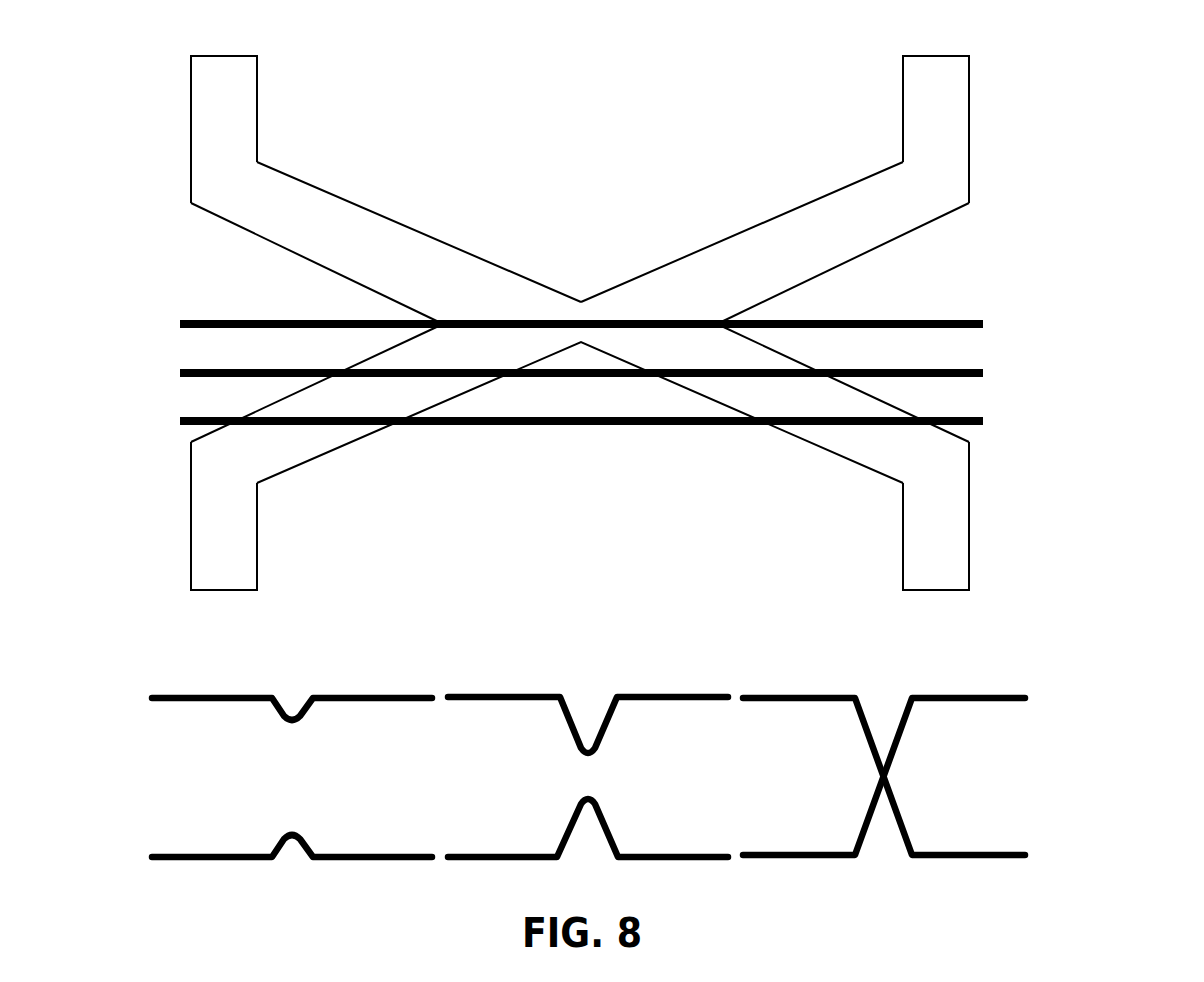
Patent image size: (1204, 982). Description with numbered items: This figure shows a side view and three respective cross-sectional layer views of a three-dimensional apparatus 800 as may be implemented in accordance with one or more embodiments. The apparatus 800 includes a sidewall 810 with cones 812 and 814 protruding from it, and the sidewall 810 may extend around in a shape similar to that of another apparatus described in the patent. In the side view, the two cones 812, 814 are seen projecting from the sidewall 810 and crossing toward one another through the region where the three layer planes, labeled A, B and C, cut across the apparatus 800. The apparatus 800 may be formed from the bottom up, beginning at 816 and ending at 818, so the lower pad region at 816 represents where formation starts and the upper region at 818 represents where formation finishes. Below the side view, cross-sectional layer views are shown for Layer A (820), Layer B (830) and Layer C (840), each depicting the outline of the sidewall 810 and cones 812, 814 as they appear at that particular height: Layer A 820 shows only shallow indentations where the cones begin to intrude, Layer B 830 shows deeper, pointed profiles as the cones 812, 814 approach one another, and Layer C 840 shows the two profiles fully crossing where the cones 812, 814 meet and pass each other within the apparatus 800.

The 3D apparatus 800 is at (1116, 71).
The sidewall 810 is at (228, 56).
The cone 812 is at (430, 237).
The cone 814 is at (720, 241).
The beginning location of bottom-up formation 816 is at (920, 595).
The ending location of bottom-up formation 818 is at (935, 56).
The Layer A 820 is at (352, 680).
The Layer B 830 is at (649, 680).
The Layer C 840 is at (931, 681).